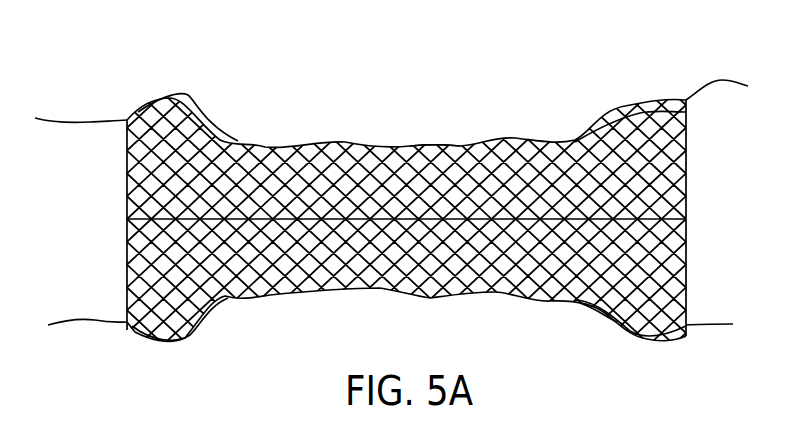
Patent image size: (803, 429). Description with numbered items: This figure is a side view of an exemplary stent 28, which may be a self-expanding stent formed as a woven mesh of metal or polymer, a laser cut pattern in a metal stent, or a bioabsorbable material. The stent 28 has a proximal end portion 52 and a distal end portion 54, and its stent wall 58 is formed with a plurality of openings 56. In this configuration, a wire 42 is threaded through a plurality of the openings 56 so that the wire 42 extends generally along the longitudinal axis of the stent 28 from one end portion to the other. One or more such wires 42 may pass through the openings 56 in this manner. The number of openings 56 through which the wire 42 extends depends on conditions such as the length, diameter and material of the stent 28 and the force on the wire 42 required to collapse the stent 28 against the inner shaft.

The stent 28 is at (560, 92).
The wire 42 is at (73, 118).
The proximal end portion 52 is at (145, 82).
The distal end portion 54 is at (662, 77).
The openings 56 is at (458, 170).
The stent wall 58 is at (598, 312).